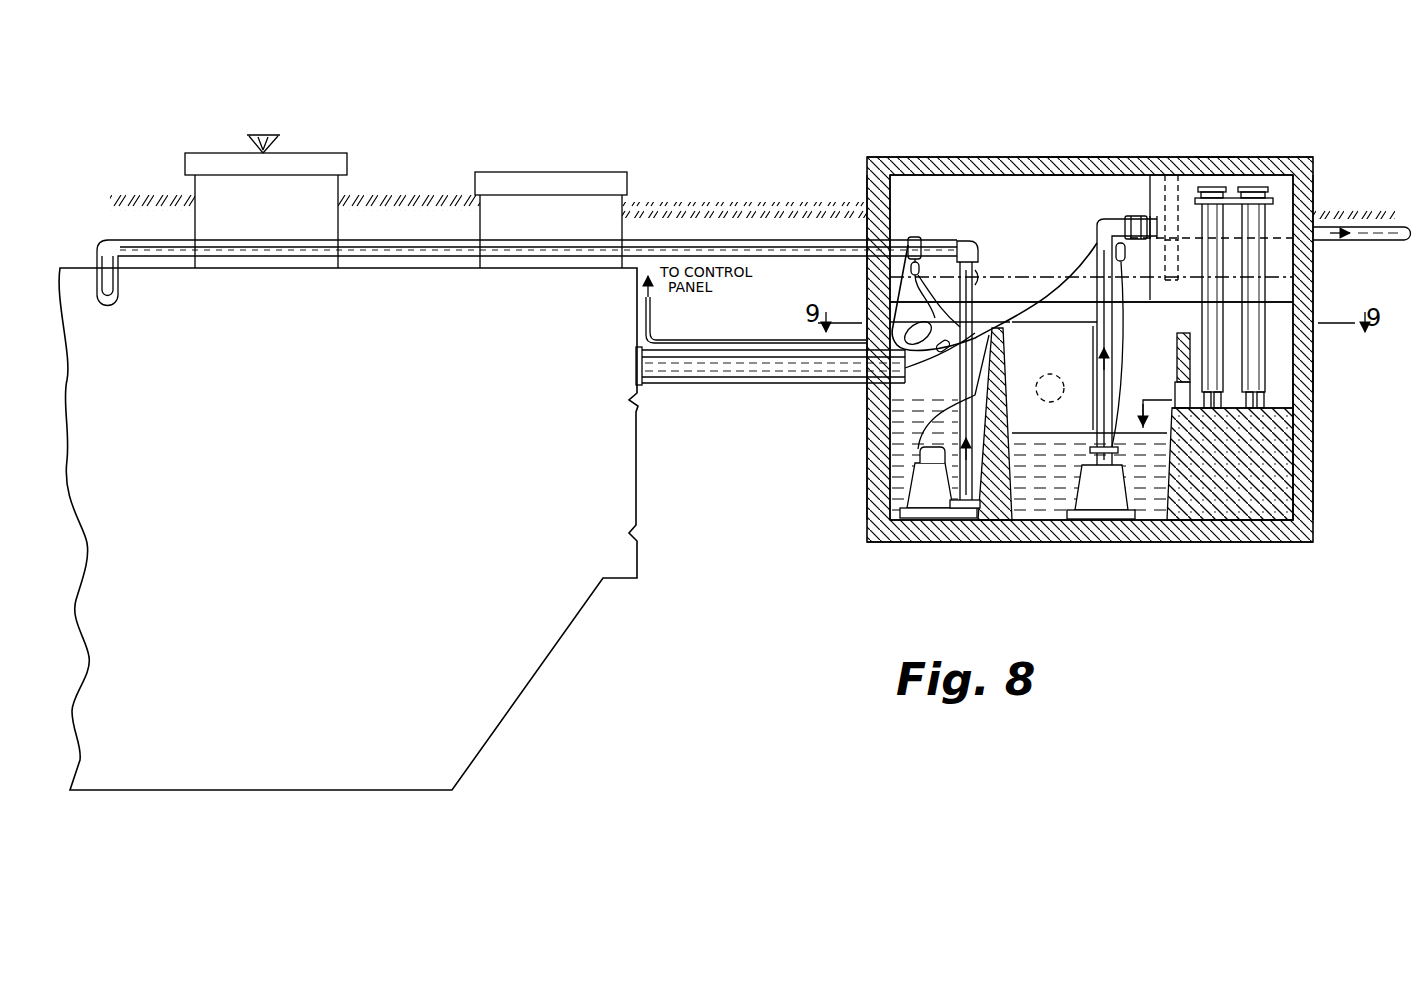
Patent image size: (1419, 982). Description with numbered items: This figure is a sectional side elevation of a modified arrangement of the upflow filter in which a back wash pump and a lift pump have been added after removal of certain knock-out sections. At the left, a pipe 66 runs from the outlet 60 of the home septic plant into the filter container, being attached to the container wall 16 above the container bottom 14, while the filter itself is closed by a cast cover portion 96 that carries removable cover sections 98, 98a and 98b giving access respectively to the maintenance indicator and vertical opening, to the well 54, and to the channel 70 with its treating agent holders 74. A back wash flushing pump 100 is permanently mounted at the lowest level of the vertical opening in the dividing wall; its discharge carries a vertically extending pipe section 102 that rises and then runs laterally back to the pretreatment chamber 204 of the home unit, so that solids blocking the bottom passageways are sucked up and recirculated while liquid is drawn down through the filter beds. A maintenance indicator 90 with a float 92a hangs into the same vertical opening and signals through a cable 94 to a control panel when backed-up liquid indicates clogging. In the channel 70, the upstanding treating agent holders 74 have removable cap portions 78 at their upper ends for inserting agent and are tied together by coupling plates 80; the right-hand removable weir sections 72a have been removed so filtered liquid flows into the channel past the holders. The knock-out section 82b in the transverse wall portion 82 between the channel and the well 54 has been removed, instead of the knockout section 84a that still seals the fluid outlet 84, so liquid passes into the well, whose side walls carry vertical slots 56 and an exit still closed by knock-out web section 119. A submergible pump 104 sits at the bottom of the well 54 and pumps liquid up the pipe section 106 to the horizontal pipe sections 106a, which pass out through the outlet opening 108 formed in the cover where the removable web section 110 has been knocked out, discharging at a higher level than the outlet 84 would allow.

The pretreatment chamber 204 is at (80, 288).
The outlet 60 is at (643, 366).
The pipe 66 is at (733, 384).
The cast cover portion 96 is at (862, 182).
The removable cover section 98 is at (968, 156).
The removable cover section 98a is at (1078, 156).
The removable cover section 98b is at (1212, 156).
The wall of the container 16 is at (866, 491).
The sump floor 14 is at (1140, 542).
The coupling plates 80 is at (1276, 186).
The removable weir sections 72a is at (1315, 376).
The knockout section 84a is at (1294, 395).
The fluid outlet 84 is at (1305, 409).
The well or chamber 54 is at (1003, 396).
The channel 70 is at (1240, 429).
The back wash flushing pump 100 is at (920, 502).
The vertically extending pipe section 102 is at (976, 261).
The maintenance indicator 90 is at (992, 290).
The cable 94 is at (922, 342).
The float 92a is at (944, 356).
The vertical slots 56 is at (1097, 355).
The submergible pump 104 is at (1092, 519).
The pipe section 106 is at (1093, 316).
The outlet opening 108 is at (1160, 215).
The removable web section 110 is at (1168, 265).
The horizontal pipe sections 106a is at (1186, 265).
The knock-out web section 119 is at (1046, 376).
The transverse wall portion 82 is at (1178, 354).
The knock-out section 82b is at (1176, 394).
The treating agent holder 74 is at (1265, 272).
The removable cap portions 78 is at (1249, 187).